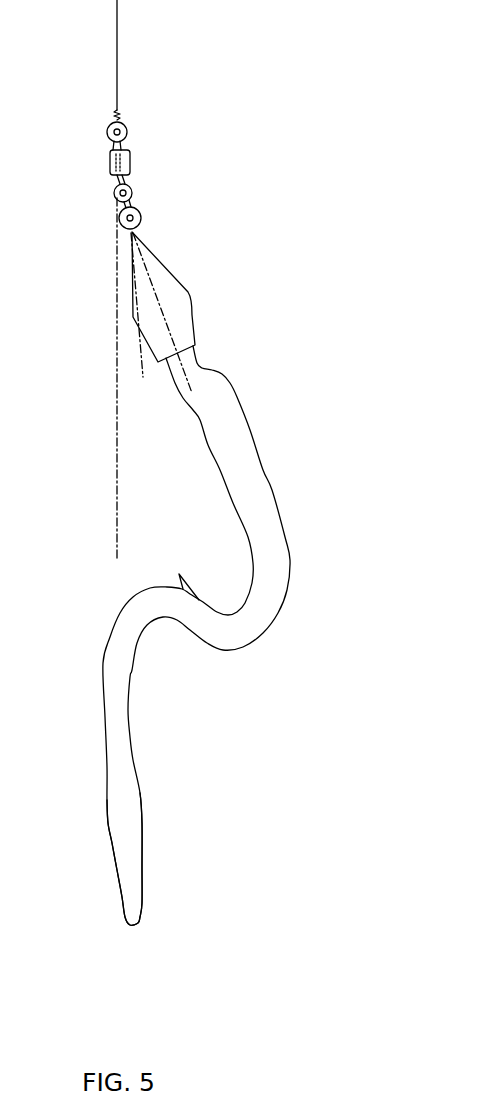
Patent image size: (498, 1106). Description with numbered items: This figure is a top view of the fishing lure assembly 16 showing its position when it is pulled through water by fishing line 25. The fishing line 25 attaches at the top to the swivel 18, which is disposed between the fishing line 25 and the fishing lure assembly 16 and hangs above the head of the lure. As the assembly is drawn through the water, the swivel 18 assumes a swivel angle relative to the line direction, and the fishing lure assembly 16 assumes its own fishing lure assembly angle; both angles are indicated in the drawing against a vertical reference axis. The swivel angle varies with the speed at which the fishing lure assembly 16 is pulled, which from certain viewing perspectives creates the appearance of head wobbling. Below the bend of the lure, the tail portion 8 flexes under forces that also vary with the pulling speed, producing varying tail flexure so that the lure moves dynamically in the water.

The fishing line 25 is at (118, 73).
The swivel mechanism 18 is at (150, 157).
The fishing lure assembly 16 is at (137, 367).
The tail portion 8 is at (140, 795).